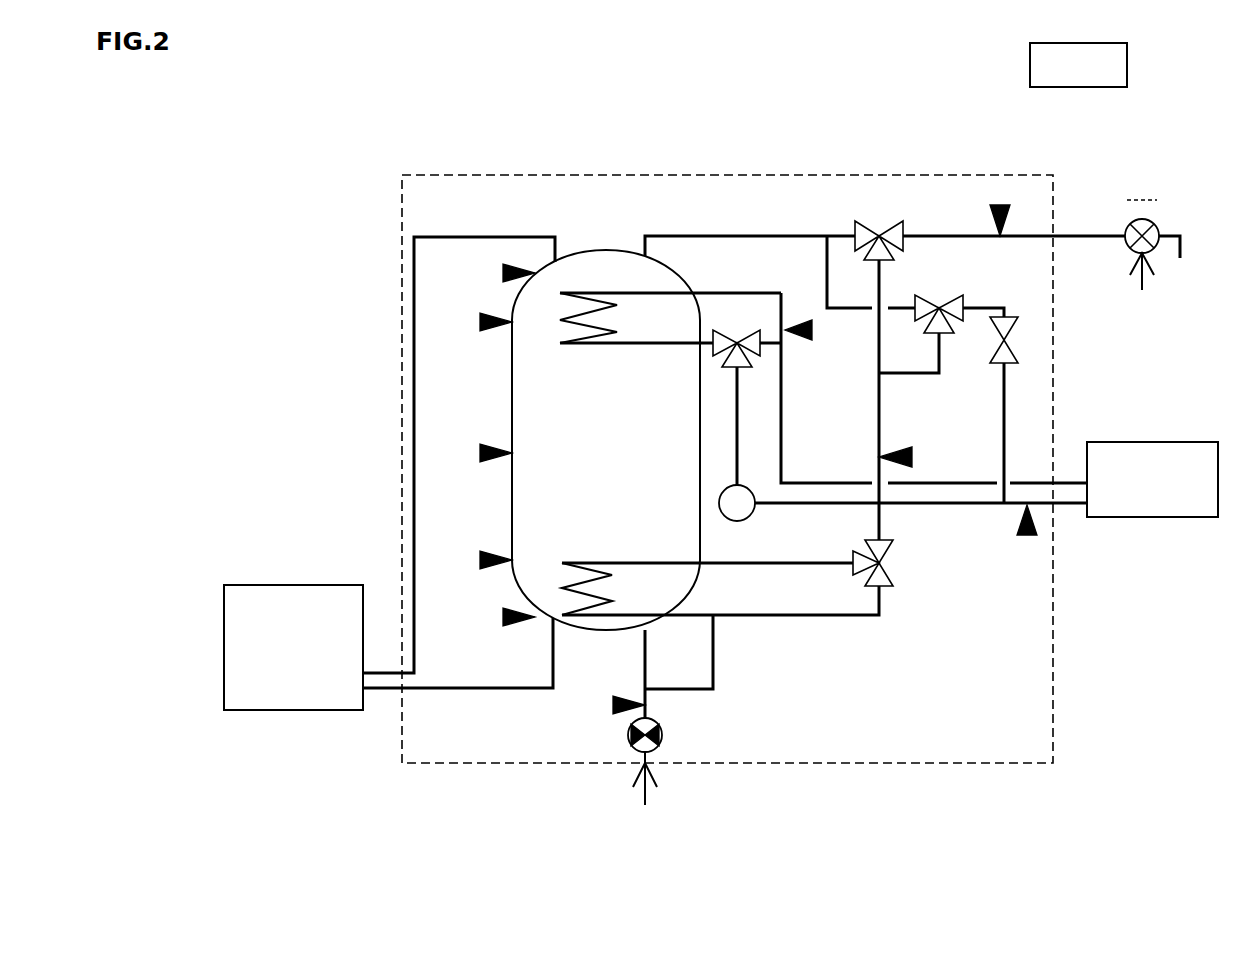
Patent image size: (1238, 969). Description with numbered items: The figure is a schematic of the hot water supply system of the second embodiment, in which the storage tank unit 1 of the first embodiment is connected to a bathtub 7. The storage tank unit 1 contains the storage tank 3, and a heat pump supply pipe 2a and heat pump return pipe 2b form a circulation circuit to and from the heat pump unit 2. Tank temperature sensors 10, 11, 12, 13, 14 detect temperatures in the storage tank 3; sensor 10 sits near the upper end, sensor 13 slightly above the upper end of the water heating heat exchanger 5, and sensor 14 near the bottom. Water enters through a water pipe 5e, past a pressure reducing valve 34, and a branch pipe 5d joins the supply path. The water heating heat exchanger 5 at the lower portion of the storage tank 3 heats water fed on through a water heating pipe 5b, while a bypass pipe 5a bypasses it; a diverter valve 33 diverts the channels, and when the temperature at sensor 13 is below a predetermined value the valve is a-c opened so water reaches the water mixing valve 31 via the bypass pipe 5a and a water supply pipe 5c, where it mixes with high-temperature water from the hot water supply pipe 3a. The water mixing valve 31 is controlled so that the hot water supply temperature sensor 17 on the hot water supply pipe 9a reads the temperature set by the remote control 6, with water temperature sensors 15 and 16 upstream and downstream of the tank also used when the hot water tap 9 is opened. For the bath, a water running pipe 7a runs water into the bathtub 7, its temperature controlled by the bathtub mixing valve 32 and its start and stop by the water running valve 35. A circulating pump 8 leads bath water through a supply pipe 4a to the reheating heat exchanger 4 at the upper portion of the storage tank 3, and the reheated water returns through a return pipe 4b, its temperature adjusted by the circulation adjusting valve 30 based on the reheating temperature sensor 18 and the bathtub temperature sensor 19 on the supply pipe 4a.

The storage tank unit 1 is at (402, 203).
The heat pump unit 2 is at (293, 585).
The heat pump supply pipe 2a is at (450, 690).
The heat pump return pipe 2b is at (414, 428).
The storage tank 3 is at (512, 392).
The hot water supply pipe 3a is at (728, 236).
The reheating heat exchanger 4 is at (603, 293).
The supply pipe 4a is at (737, 425).
The return pipe 4b is at (781, 405).
The water heating heat exchanger 5 is at (592, 566).
The bypass pipe 5a is at (720, 621).
The water heating pipe 5b is at (707, 582).
The water supply pipe 5c is at (871, 388).
The branch pipe 5d is at (679, 652).
The water pipe 5e is at (627, 674).
The remote control 6 is at (1030, 62).
The bathtub 7 is at (1160, 517).
The water running pipe 7a is at (1004, 405).
The circulating pump 8 is at (752, 515).
The hot water tap 9 is at (1142, 200).
The hot water supply pipe 9a is at (944, 236).
The tank temperature sensor 10 is at (503, 274).
The tank temperature sensor 11 is at (480, 324).
The tank temperature sensor 12 is at (480, 455).
The tank temperature sensor 13 is at (480, 562).
The tank temperature sensor 14 is at (505, 619).
The water temperature sensor 15 is at (614, 707).
The water temperature sensor 16 is at (912, 459).
The hot water supply temperature sensor 17 is at (1000, 208).
The reheating temperature sensor 18 is at (816, 333).
The bathtub temperature sensor 19 is at (1028, 538).
The circulation adjusting valve 30 is at (740, 330).
The water mixing valve 31 is at (880, 232).
The bathtub mixing valve 32 is at (945, 295).
The diverter valve 33 is at (886, 568).
The pressure reducing valve 34 is at (663, 735).
The water running valve 35 is at (1010, 345).